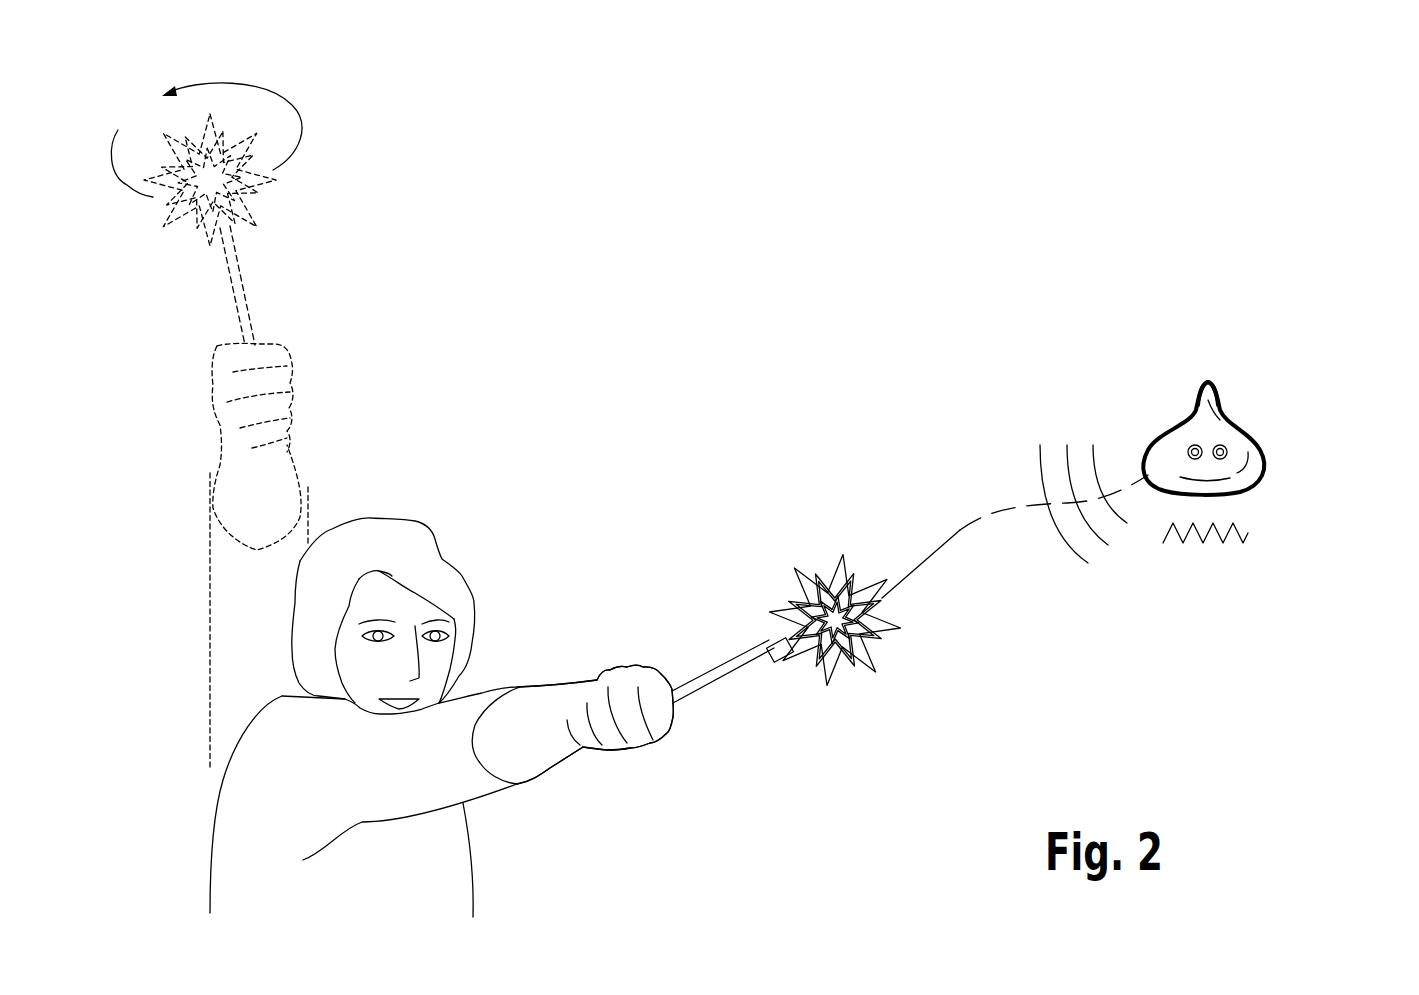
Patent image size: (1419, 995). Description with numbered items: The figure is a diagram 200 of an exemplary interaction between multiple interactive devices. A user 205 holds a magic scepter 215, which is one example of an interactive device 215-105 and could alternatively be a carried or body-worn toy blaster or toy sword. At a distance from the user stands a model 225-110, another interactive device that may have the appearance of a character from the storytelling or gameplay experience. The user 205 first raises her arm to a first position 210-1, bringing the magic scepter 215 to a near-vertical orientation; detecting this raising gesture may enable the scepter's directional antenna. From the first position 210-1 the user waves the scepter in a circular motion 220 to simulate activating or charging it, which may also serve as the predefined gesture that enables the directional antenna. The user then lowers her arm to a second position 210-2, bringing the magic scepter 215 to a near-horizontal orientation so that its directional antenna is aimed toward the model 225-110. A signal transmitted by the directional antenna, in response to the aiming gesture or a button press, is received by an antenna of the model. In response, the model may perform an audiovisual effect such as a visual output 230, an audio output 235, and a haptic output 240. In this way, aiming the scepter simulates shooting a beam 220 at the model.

The diagram 200 is at (1086, 162).
The user 205 is at (477, 491).
The first position 210-1 is at (222, 455).
The second position 210-2 is at (563, 688).
The magic scepter 215 is at (713, 687).
The magic scepter (interactive device) 215-105 is at (237, 252).
The circular motion / beam 220 is at (300, 128).
The model (interactive device) 225-110 is at (1265, 447).
The visual output 230 is at (1210, 382).
The audio output 235 is at (1103, 430).
The haptic output 240 is at (1248, 537).